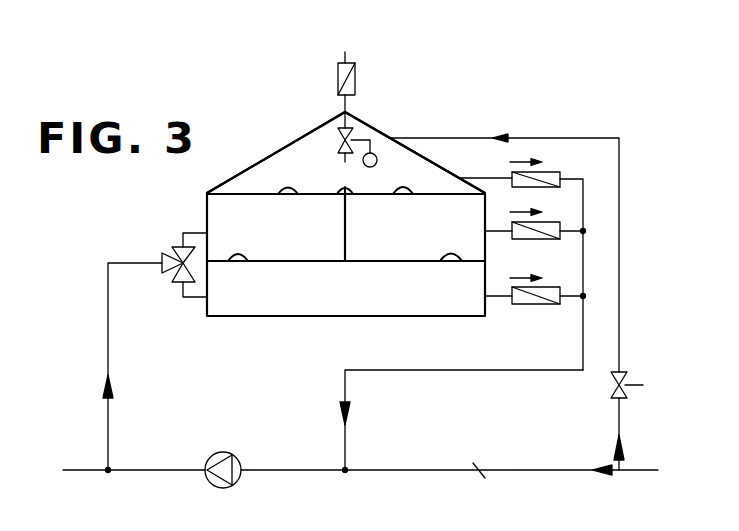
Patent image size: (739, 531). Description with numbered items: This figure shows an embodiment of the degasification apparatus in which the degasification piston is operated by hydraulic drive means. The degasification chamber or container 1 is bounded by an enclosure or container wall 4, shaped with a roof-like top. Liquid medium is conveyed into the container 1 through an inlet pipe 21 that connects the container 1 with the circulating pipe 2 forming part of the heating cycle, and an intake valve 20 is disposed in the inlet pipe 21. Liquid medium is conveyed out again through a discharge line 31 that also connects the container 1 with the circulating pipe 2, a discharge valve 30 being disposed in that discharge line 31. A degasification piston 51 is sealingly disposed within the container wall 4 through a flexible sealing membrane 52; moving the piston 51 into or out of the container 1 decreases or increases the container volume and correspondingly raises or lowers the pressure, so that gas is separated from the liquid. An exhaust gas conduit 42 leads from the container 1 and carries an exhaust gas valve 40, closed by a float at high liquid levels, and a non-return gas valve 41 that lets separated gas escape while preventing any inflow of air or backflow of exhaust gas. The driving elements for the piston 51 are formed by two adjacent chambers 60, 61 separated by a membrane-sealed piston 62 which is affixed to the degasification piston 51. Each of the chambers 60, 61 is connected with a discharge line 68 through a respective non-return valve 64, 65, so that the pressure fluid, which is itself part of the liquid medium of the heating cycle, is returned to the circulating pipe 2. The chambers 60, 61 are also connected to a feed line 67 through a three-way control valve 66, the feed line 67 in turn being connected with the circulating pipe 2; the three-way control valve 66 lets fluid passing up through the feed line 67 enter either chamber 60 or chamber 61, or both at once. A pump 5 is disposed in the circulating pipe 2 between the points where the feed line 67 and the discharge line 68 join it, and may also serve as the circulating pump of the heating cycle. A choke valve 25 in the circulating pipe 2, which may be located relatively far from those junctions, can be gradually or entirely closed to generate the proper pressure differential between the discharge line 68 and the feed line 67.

The degasification container 1 is at (260, 181).
The circulating pipe 2 is at (637, 467).
The container wall 4 is at (278, 150).
The pump 5 is at (232, 452).
The intake valve 20 is at (632, 375).
The inlet pipe 21 is at (473, 138).
The choke valve 25 is at (484, 463).
The discharge valve 30 is at (553, 178).
The discharge line 31 is at (482, 178).
The exhaust gas valve 40 is at (341, 140).
The non-return gas valve 41 is at (355, 80).
The exhaust gas conduit 42 is at (348, 55).
The degasification piston 51 is at (350, 189).
The flexible sealing membrane 52 is at (407, 187).
The pressure chamber 60 is at (374, 233).
The pressure chamber 61 is at (388, 296).
The piston 62 is at (313, 262).
The non-return valve 64 is at (543, 228).
The non-return valve 65 is at (543, 293).
The three-way control valve 66 is at (161, 243).
The feed line 67 is at (111, 349).
The discharge line 68 is at (402, 370).